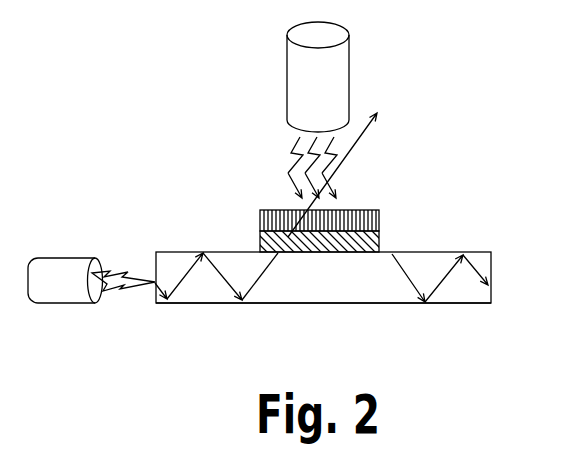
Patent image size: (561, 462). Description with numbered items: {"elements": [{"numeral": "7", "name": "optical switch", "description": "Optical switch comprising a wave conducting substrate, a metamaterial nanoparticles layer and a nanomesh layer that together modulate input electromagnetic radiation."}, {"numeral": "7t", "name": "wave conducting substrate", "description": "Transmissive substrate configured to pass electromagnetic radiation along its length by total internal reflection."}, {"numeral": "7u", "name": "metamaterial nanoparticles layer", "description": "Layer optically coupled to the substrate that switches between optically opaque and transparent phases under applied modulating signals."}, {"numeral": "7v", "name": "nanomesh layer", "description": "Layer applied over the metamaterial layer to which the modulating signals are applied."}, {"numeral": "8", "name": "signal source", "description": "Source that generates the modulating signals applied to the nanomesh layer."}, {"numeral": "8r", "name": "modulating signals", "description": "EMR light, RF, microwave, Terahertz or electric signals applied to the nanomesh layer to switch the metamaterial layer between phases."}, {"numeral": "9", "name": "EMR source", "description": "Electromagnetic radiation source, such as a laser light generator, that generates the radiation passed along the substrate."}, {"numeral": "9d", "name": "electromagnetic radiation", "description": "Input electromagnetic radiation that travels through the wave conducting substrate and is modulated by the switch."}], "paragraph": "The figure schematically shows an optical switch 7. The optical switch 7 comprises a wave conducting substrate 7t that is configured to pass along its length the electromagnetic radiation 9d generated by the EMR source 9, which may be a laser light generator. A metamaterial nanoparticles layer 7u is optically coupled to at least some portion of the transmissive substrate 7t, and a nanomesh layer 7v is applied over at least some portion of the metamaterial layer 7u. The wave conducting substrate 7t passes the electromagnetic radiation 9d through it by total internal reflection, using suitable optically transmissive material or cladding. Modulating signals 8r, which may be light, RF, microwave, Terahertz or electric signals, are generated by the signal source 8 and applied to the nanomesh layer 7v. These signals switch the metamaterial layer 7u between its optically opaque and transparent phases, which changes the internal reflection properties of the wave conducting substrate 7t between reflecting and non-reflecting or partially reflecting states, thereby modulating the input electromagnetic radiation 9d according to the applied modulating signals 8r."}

The light guide plate 7 is at (108, 110).
The bottom surface of light guide plate 7t is at (223, 303).
The light conversion layer 7u is at (260, 247).
The light receiving layer 7v is at (380, 217).
The light source 8 is at (287, 88).
The light rays 8r is at (297, 187).
The second light source 9 is at (73, 258).
The light beam from second light source 9d is at (185, 275).